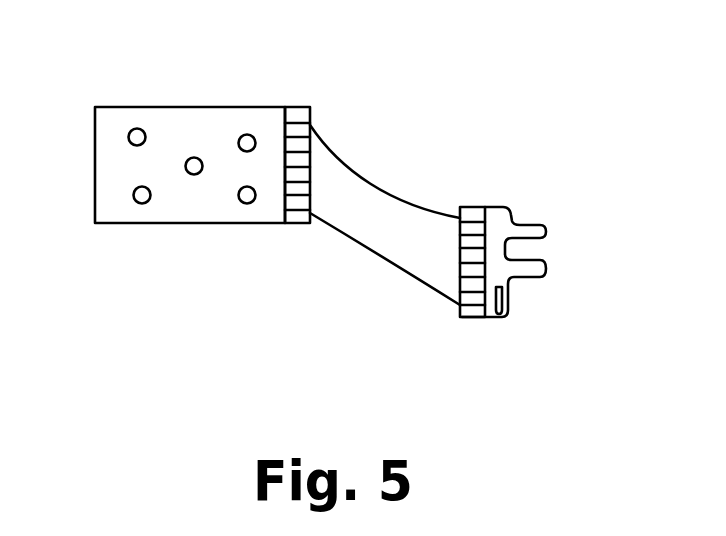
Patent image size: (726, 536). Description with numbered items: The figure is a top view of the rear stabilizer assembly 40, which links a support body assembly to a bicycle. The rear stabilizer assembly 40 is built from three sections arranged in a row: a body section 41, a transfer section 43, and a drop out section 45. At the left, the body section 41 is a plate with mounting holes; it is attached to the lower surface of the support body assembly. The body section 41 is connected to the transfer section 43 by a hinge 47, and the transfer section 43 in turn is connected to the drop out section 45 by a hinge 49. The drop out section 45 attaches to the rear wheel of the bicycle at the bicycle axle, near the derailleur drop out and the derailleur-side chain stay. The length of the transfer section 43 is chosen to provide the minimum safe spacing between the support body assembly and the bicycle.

The rear stabilizer assembly 40 is at (255, 364).
The body section 41 is at (132, 107).
The transfer section 43 is at (367, 185).
The drop out section 45 is at (510, 207).
The hinge 47 is at (303, 107).
The hinge 49 is at (472, 318).